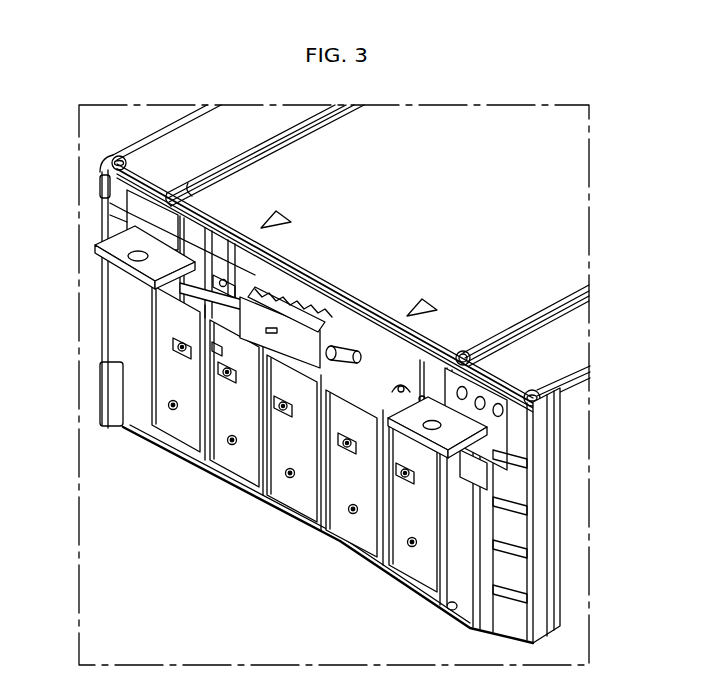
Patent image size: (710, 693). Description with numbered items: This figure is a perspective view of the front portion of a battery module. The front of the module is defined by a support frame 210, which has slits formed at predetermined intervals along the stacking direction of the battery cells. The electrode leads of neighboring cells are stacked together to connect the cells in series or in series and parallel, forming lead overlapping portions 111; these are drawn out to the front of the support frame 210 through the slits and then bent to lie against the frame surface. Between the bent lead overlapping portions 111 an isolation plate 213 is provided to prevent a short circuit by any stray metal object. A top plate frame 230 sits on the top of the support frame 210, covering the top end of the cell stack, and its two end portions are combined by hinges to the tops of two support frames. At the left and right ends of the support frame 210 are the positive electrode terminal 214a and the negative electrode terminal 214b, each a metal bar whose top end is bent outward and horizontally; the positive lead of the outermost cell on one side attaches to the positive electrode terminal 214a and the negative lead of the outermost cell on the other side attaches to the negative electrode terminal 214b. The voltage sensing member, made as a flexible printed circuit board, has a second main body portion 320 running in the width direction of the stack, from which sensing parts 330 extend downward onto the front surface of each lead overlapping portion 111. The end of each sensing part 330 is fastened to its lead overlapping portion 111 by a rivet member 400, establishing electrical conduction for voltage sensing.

The lead overlapping portion 111 is at (243, 452).
The support frame 210 is at (510, 568).
The isolation plate 213 is at (312, 532).
The positive electrode terminal 214a is at (160, 293).
The negative electrode terminal 214b is at (473, 470).
The top plate frame 230 is at (562, 246).
The second main body portion 320 is at (175, 312).
The sensing part 330 is at (215, 352).
The rivet member 400 is at (224, 375).